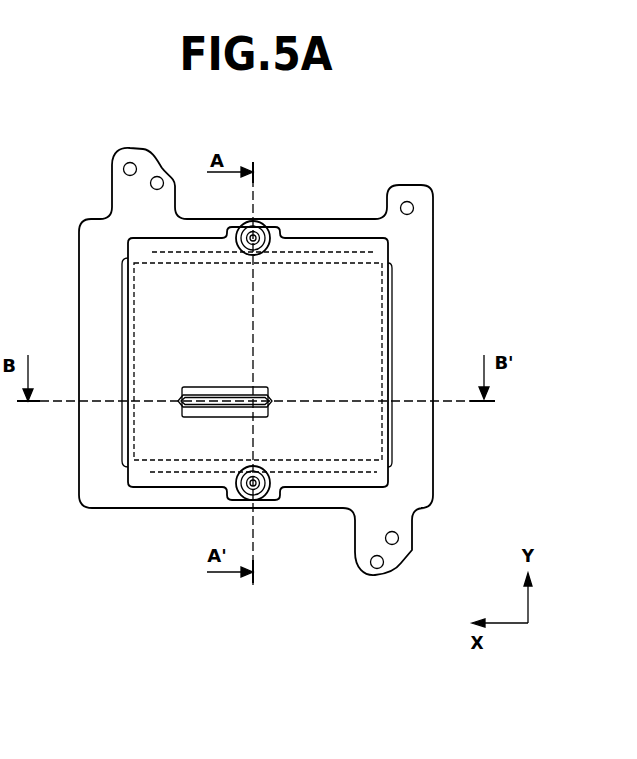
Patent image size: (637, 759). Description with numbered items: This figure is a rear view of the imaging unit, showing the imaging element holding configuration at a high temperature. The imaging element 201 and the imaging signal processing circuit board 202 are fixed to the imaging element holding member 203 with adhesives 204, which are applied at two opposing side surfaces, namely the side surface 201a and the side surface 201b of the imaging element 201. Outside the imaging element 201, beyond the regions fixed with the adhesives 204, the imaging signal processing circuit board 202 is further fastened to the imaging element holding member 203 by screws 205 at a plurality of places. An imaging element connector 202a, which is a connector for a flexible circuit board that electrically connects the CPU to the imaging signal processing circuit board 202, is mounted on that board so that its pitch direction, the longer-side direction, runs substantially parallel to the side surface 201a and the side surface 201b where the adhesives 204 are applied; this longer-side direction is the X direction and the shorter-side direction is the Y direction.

The imaging element 201 is at (365, 313).
The side surface 201a is at (142, 262).
The side surface 201b is at (125, 485).
The imaging signal processing circuit board 202 is at (145, 455).
The imaging element connector 202a is at (223, 407).
The imaging element holding member 203 is at (340, 228).
The adhesives 204 is at (360, 255).
The screws 205 is at (258, 225).